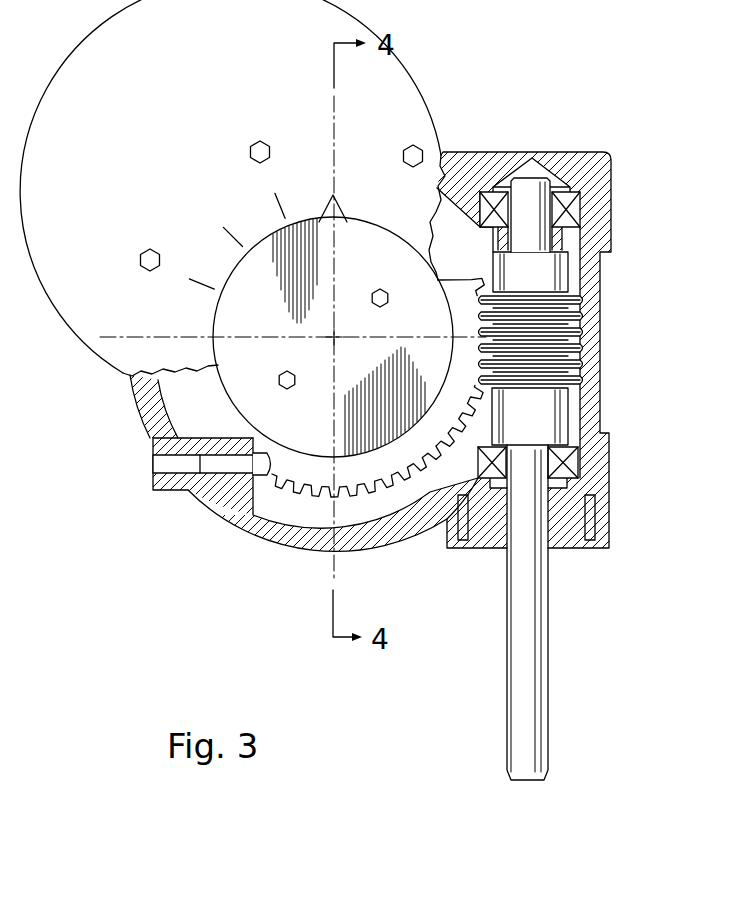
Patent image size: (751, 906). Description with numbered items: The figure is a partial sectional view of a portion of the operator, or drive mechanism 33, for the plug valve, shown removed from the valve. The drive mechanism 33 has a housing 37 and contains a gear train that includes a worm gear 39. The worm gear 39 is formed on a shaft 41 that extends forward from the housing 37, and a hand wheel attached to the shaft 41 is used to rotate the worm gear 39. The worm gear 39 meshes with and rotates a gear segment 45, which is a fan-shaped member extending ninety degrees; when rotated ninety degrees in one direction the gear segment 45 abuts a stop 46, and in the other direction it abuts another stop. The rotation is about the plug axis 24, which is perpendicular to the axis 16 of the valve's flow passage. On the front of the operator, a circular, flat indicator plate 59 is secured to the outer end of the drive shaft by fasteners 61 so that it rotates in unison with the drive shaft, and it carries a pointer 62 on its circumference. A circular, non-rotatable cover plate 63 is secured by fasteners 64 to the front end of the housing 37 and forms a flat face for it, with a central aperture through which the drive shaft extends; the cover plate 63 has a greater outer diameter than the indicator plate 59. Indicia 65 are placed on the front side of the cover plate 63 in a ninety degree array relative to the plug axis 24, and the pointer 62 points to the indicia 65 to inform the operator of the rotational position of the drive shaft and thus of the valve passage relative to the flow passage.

The axis 16 is at (430, 285).
The axis 24 is at (333, 338).
The drive mechanism 33 is at (636, 236).
The housing 37 is at (600, 384).
The worm gear 39 is at (600, 327).
The shaft 41 is at (548, 669).
The gear segment 45 is at (310, 473).
The stop 46 is at (153, 472).
The indicator plate 59 is at (257, 380).
The fasteners 61 is at (295, 378).
The pointer 62 is at (333, 197).
The cover plate 63 is at (143, 288).
The fasteners 64 is at (147, 258).
The indicia 65 is at (153, 320).